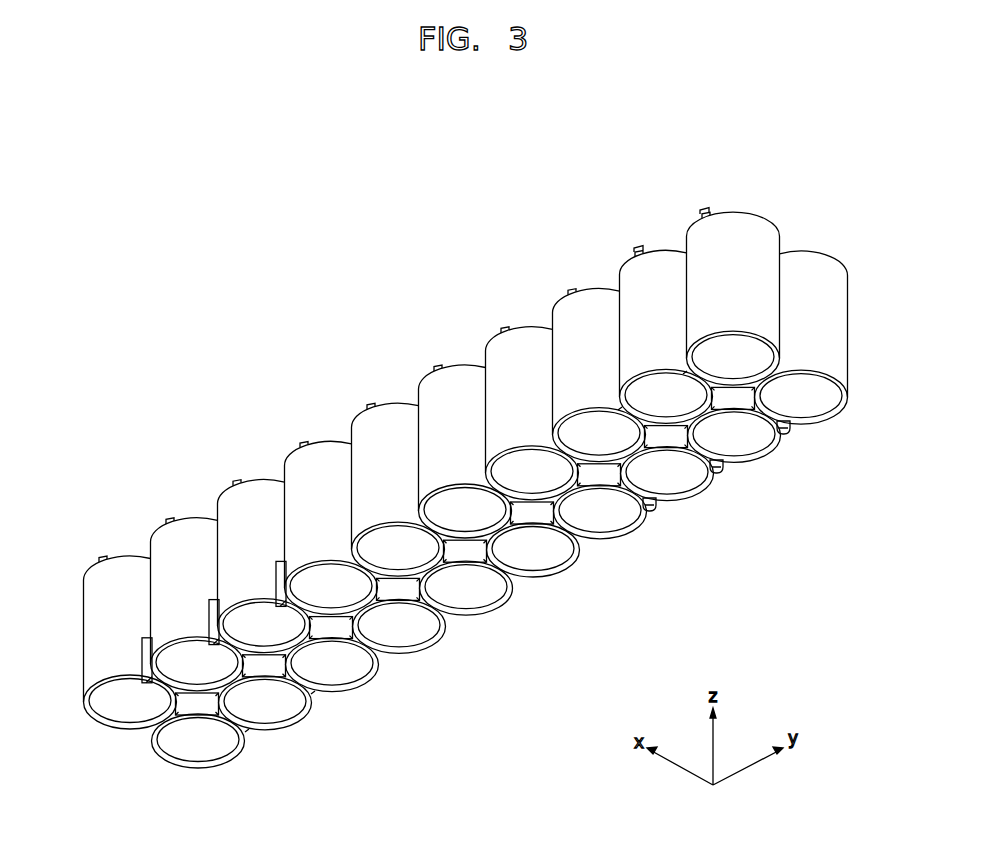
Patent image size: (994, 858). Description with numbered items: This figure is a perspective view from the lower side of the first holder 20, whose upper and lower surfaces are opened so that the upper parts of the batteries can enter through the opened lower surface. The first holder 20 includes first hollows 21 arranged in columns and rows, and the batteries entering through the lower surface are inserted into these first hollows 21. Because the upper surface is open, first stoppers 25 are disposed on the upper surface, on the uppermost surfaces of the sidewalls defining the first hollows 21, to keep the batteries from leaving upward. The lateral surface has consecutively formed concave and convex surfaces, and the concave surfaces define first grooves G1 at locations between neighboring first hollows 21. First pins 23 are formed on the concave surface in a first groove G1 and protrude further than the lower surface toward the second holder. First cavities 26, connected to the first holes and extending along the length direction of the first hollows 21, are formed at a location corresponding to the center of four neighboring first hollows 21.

The first holder 20 is at (775, 184).
The first hollows 21 is at (725, 365).
The first pins 23 is at (148, 650).
The first stoppers 25 is at (700, 212).
The first cavities 26 is at (272, 664).
The first grooves G1 is at (685, 372).